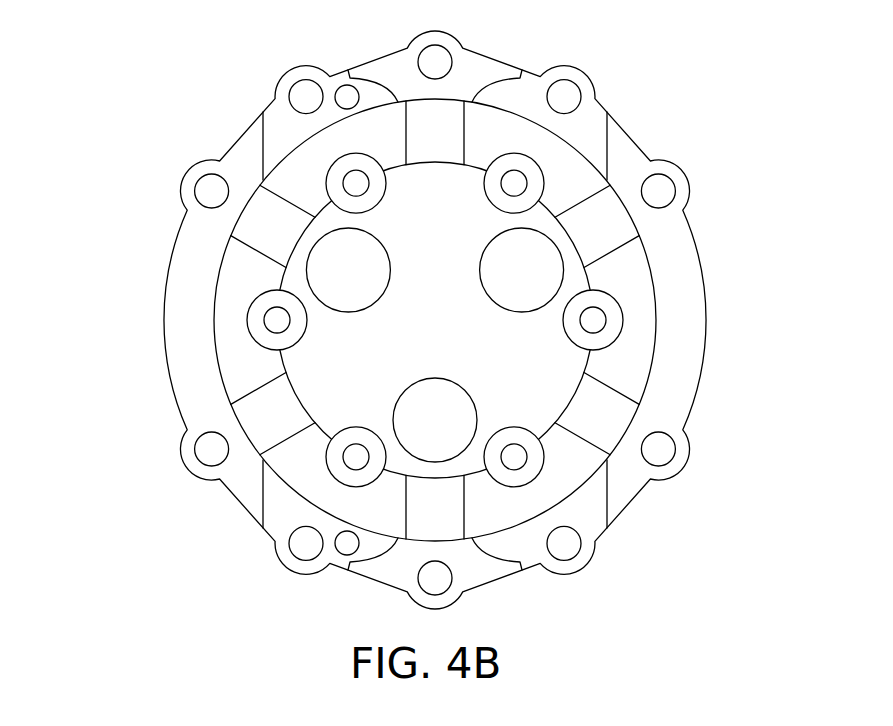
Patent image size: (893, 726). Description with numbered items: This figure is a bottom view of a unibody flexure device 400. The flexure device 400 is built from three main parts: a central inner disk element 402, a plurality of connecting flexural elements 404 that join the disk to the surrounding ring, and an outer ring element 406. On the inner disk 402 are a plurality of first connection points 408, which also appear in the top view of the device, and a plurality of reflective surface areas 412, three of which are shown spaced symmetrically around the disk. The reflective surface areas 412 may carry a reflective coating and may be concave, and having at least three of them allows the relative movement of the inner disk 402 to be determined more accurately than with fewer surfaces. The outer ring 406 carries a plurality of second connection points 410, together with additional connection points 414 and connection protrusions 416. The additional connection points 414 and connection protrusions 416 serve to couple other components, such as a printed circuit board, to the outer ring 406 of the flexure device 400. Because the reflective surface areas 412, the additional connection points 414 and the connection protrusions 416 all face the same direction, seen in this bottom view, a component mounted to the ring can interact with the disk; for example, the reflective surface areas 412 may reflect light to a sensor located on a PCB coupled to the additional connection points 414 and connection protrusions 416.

The flexure device 400 is at (92, 114).
The inner disk element 402 is at (450, 230).
The connecting flexural elements 404 is at (597, 220).
The outer ring element 406 is at (678, 352).
The first connection points 408 is at (279, 320).
The second connection points 410 is at (211, 192).
The reflective surface areas 412 is at (307, 255).
The additional connection points 414 is at (307, 545).
The connection protrusions 416 is at (347, 545).